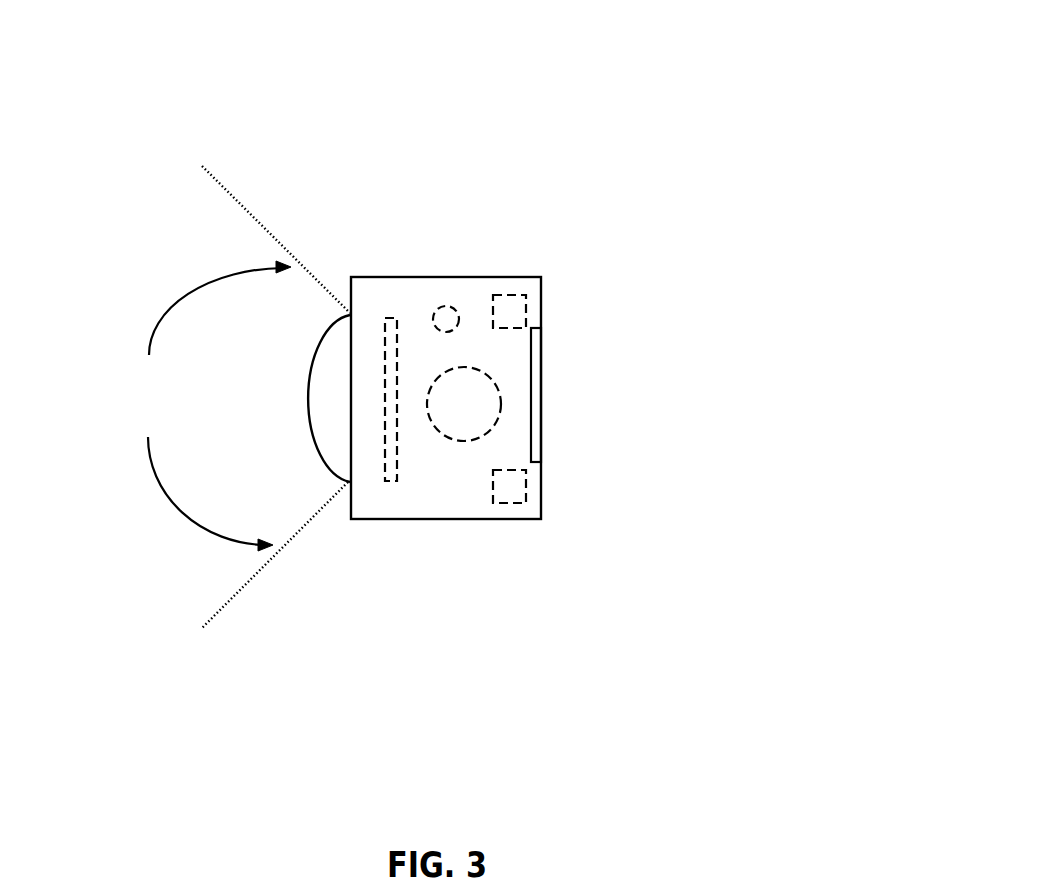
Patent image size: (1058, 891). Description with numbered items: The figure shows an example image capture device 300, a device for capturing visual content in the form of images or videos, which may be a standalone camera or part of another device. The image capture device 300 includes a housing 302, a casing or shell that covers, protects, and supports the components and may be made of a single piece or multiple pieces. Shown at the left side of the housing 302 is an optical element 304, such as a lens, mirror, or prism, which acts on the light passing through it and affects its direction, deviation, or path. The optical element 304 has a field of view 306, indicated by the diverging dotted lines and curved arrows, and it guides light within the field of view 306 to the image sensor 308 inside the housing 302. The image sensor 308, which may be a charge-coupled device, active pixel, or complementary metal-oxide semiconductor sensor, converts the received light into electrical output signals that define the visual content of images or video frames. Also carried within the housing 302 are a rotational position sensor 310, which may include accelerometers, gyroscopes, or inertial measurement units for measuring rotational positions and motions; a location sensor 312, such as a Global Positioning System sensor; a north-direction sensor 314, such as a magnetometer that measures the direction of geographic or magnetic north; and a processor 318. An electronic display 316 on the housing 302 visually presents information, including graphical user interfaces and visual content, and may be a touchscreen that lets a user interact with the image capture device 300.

The image capture device 300 is at (509, 138).
The housing 302 is at (368, 520).
The optical element 304 is at (327, 473).
The field of view 306 is at (201, 397).
The image sensor 308 is at (445, 228).
The rotational position sensor 310 is at (440, 310).
The location sensor 312 is at (525, 312).
The north-direction sensor 314 is at (525, 487).
The electronic display 316 is at (541, 406).
The processor 318 is at (464, 441).